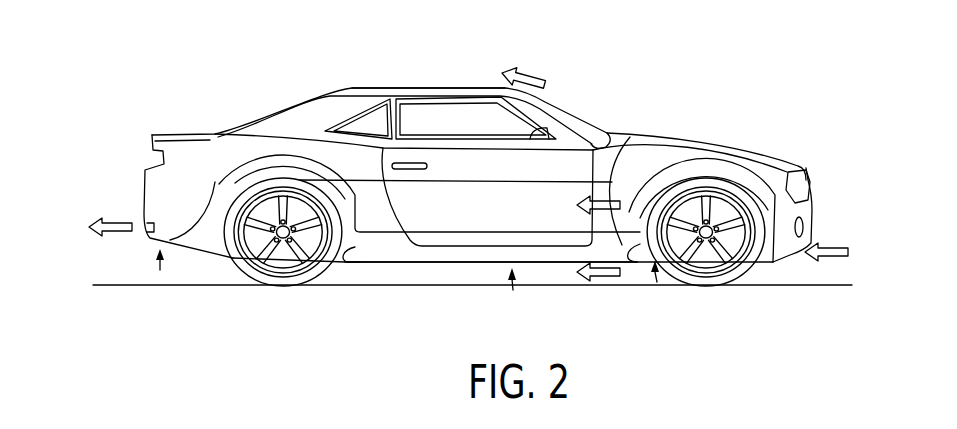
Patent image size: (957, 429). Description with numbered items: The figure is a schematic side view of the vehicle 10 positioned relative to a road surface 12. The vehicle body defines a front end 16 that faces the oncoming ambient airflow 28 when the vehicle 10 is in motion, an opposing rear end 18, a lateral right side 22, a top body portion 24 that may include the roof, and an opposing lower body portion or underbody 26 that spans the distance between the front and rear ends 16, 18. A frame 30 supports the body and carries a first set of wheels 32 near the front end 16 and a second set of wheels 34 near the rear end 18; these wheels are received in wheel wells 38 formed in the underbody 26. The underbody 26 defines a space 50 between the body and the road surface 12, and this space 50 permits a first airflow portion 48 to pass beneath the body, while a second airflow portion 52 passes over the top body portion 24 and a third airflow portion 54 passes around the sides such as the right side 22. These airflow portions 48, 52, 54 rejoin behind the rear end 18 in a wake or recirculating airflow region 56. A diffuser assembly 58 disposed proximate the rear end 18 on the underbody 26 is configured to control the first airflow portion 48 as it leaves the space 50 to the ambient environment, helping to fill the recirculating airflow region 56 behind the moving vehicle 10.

The vehicle 10 is at (596, 107).
The road surface 12 is at (765, 287).
The front end 16 is at (812, 205).
The rear end 18 is at (143, 210).
The right side 22 is at (434, 207).
The top body portion 24 is at (410, 87).
The underbody 26 is at (392, 274).
The oncoming ambient airflow 28 is at (840, 250).
The frame 30 is at (657, 282).
The first set of wheels 32 is at (745, 205).
The second set of wheels 34 is at (243, 208).
The wheel wells 38 is at (347, 252).
The first airflow portion 48 is at (602, 279).
The space 50 is at (513, 290).
The second airflow portion 52 is at (530, 72).
The third airflow portion 54 is at (612, 200).
The recirculating airflow region 56 is at (112, 236).
The diffuser assembly 58 is at (160, 270).